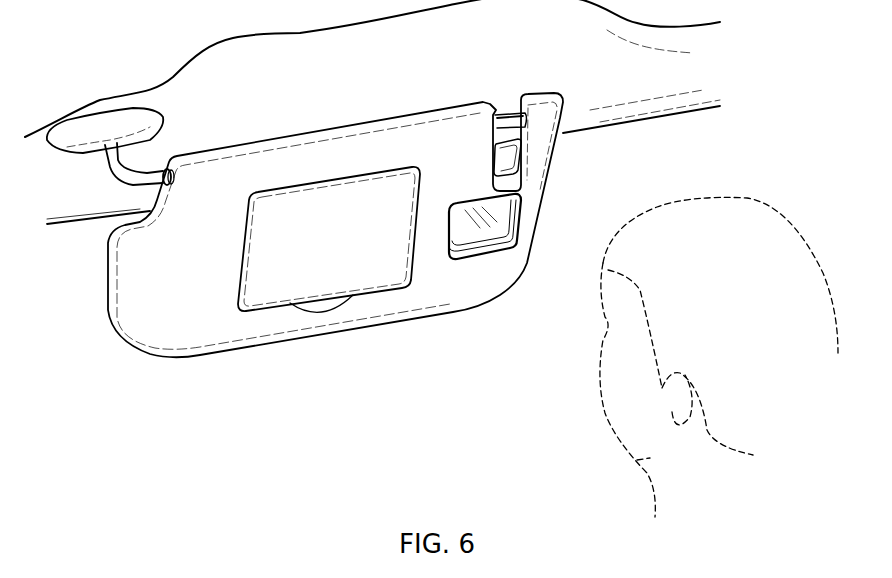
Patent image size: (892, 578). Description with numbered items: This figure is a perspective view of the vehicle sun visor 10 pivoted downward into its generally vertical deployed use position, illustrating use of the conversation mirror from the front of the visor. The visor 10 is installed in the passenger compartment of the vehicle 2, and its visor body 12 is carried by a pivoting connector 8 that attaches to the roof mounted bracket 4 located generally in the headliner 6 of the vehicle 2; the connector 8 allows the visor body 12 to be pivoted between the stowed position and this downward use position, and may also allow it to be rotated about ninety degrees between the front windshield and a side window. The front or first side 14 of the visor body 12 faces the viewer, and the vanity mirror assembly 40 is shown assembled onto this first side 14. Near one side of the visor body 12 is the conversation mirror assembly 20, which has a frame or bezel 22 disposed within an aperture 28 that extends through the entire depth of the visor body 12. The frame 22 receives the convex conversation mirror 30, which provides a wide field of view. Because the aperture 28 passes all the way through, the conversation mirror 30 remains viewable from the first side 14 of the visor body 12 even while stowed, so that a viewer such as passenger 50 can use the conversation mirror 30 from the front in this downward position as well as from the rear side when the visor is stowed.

The vehicle 2 is at (68, 230).
The roof mounted bracket 4 is at (127, 122).
The headliner 6 is at (93, 205).
The pivoting connector 8 is at (113, 170).
The vehicle sun visor 10 is at (225, 78).
The visor body 12 is at (335, 209).
The first side 14 is at (171, 293).
The conversation mirror assembly 20 is at (548, 218).
The frame 22 is at (516, 277).
The aperture 28 is at (510, 233).
The conversation mirror 30 is at (470, 230).
The vanity mirror assembly 40 is at (370, 277).
The passenger 50 is at (743, 197).